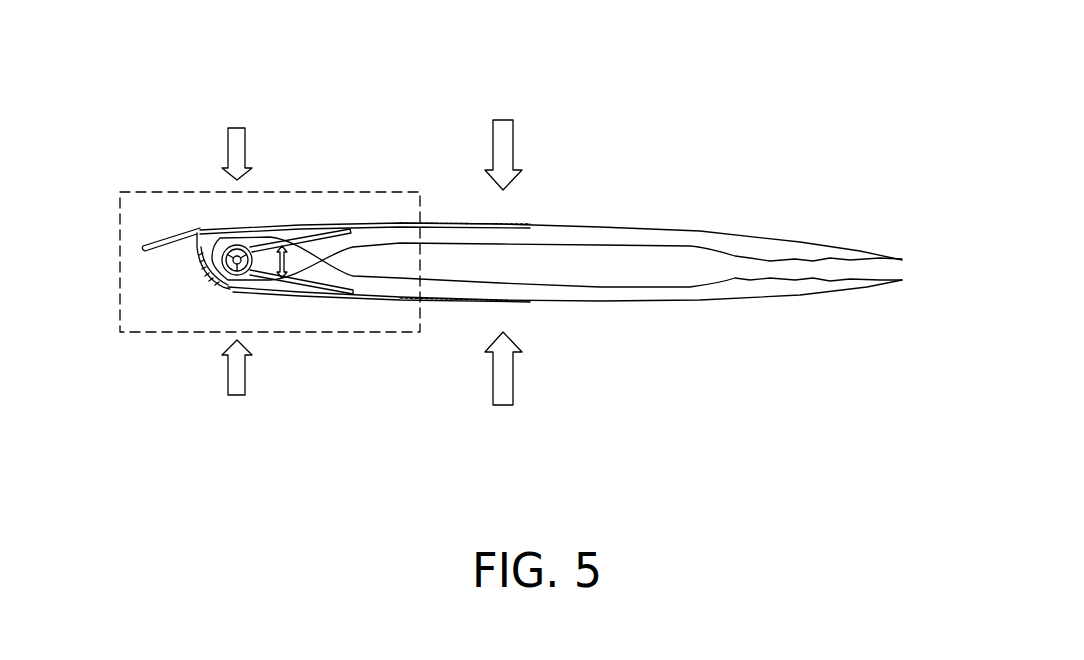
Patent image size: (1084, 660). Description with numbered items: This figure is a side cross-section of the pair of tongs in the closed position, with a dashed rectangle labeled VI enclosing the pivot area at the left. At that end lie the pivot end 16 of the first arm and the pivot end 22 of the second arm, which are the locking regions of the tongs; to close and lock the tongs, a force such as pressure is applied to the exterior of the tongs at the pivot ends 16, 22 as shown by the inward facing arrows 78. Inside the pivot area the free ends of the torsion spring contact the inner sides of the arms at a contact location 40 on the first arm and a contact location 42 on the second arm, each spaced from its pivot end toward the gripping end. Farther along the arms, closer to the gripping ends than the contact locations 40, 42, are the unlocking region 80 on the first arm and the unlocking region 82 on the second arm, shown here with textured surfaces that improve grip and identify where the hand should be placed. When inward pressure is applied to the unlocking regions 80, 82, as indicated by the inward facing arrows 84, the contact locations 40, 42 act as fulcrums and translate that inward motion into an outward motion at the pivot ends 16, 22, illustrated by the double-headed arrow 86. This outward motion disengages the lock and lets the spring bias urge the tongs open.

The pivot end 16 is at (239, 301).
The pivot end 22 is at (221, 217).
The contact location 40 is at (366, 297).
The contact location 42 is at (366, 226).
The inward facing arrows 78 is at (254, 150).
The unlocking region 80 is at (517, 309).
The unlocking region 82 is at (521, 224).
The inward facing arrows 84 is at (525, 149).
The double-headed arrow 86 is at (294, 268).
The detail view VI region VI is at (303, 182).